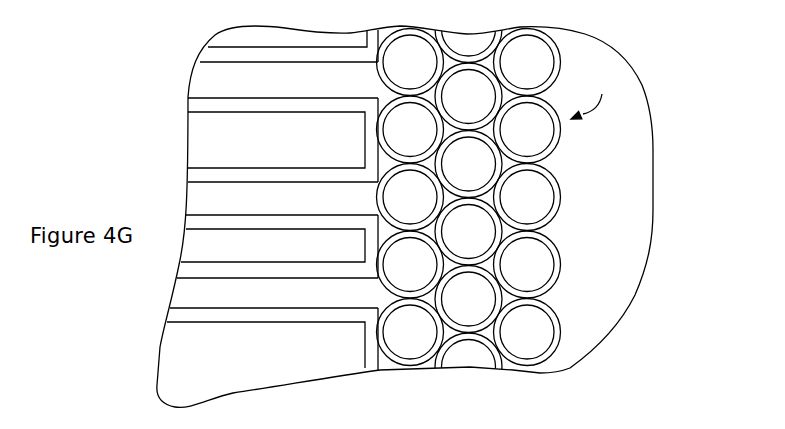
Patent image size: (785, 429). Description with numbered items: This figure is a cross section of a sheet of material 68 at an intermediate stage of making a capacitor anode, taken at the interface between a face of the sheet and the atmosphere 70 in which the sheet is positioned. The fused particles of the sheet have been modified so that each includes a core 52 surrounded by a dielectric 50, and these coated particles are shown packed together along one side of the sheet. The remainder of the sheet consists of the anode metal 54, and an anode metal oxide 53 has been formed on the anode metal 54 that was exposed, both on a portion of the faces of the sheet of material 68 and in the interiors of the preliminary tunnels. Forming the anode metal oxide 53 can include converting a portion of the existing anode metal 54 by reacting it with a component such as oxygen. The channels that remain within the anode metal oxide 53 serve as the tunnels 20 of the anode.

The tunnels 20 is at (257, 98).
The dielectrics 50 is at (415, 363).
The cores 52 is at (520, 260).
The anode metal oxide 53 is at (372, 175).
The anode metal 54 is at (280, 125).
The sheet of material 68 is at (593, 96).
The atmosphere 70 is at (613, 147).